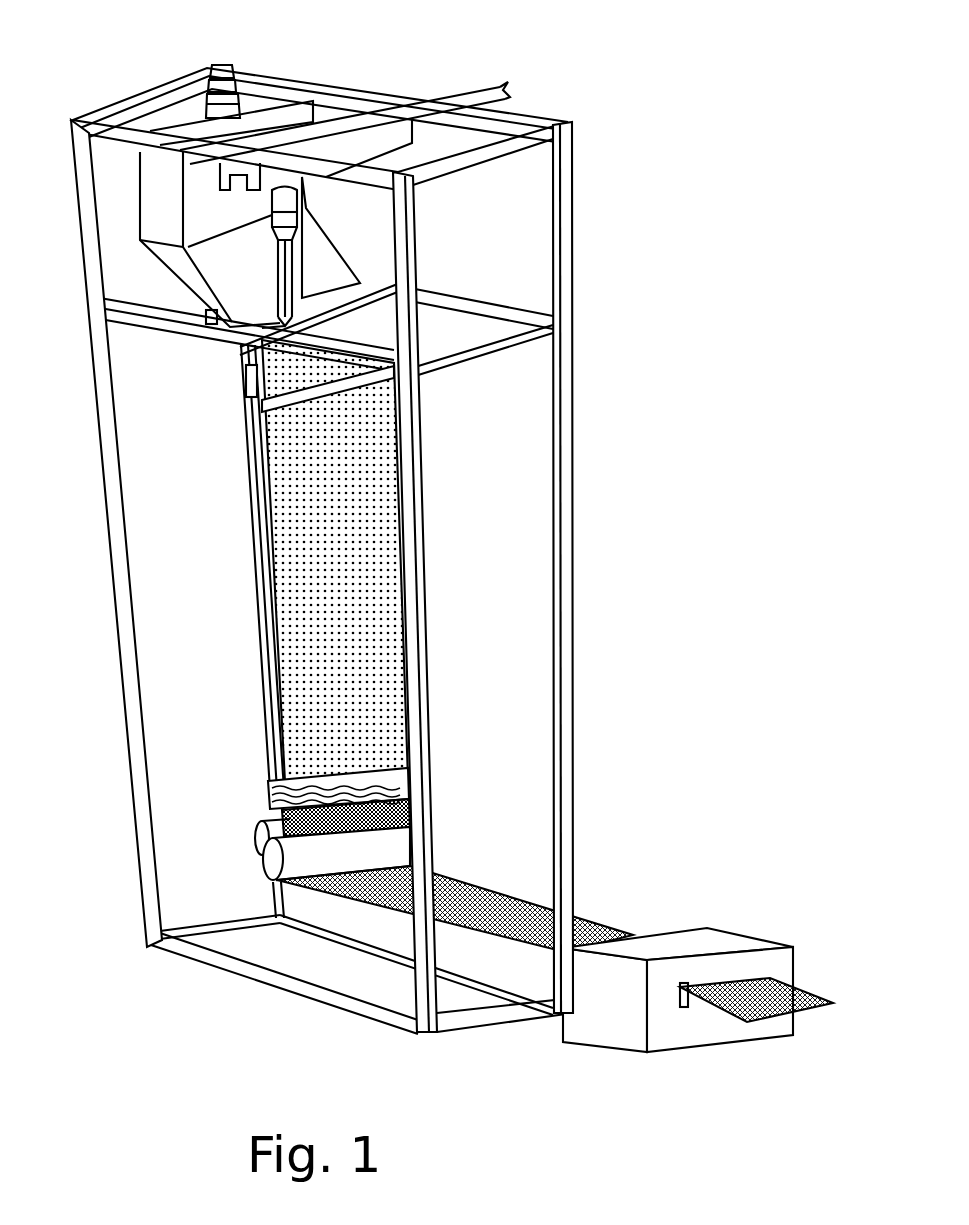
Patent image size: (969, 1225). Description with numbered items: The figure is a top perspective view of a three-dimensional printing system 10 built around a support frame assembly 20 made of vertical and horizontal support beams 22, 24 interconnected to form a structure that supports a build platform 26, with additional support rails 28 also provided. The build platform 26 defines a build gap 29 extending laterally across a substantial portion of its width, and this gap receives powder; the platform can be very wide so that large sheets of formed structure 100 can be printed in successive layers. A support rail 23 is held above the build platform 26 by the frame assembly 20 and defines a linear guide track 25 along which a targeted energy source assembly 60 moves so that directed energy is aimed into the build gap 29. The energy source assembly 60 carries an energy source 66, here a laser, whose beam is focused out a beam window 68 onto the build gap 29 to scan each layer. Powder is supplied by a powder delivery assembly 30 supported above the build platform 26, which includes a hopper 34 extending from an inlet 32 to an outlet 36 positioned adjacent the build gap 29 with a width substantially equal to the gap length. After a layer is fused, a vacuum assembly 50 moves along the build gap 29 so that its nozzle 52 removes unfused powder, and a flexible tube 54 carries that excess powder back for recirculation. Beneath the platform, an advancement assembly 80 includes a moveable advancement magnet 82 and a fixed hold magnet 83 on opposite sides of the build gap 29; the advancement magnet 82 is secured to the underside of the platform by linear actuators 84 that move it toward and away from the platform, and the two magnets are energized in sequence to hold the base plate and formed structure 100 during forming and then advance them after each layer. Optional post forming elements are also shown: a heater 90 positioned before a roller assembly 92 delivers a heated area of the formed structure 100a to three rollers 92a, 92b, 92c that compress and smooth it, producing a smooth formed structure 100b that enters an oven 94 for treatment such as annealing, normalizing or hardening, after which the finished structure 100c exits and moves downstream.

The 3D printing system 10 is at (669, 67).
The support frame assembly 20 is at (588, 397).
The vertical support beams 22 is at (121, 620).
The support rail 23 is at (388, 120).
The horizontal support beams 24 is at (151, 92).
The linear guide track 25 is at (242, 184).
The build platform 26 is at (468, 335).
The support rails 28 is at (491, 300).
The build gap 29 is at (378, 287).
The powder delivery assembly 30 is at (286, 98).
The inlet 32 is at (231, 88).
The hopper 34 is at (176, 254).
The outlet 36 is at (236, 345).
The vacuum assembly 50 is at (318, 251).
The nozzle 52 is at (300, 318).
The tube 54 is at (490, 88).
The targeted energy source assembly 60 is at (267, 237).
The energy source 66 is at (298, 200).
The beam window 68 is at (277, 313).
The advancement assembly 80 is at (240, 452).
The advancement magnet 82 is at (264, 508).
The hold magnet 83 is at (247, 375).
The linear actuators 84 is at (322, 347).
The heater 90 is at (406, 770).
The roller assembly 92 is at (329, 907).
The roller 92a is at (268, 832).
The roller 92b is at (418, 848).
The roller 92c is at (268, 905).
The oven 94 is at (736, 945).
The formed structure 100 is at (287, 628).
The heated area of the formed structure 100a is at (418, 806).
The smooth formed structure 100b is at (586, 916).
The finished structure 100c is at (810, 1000).